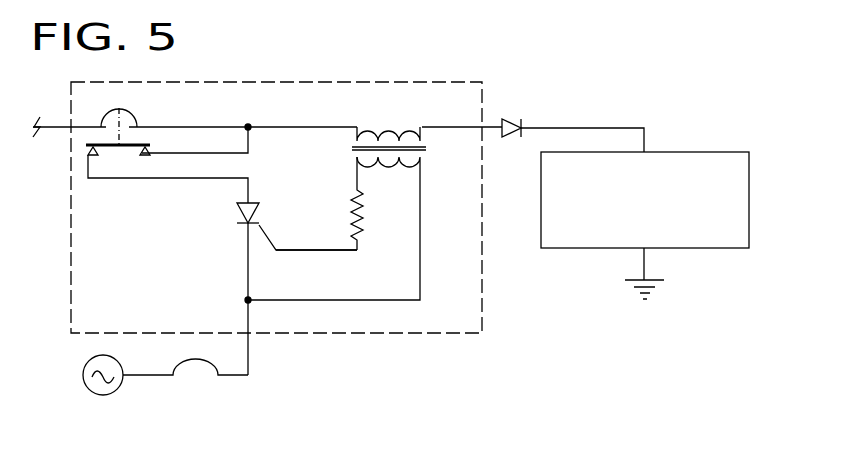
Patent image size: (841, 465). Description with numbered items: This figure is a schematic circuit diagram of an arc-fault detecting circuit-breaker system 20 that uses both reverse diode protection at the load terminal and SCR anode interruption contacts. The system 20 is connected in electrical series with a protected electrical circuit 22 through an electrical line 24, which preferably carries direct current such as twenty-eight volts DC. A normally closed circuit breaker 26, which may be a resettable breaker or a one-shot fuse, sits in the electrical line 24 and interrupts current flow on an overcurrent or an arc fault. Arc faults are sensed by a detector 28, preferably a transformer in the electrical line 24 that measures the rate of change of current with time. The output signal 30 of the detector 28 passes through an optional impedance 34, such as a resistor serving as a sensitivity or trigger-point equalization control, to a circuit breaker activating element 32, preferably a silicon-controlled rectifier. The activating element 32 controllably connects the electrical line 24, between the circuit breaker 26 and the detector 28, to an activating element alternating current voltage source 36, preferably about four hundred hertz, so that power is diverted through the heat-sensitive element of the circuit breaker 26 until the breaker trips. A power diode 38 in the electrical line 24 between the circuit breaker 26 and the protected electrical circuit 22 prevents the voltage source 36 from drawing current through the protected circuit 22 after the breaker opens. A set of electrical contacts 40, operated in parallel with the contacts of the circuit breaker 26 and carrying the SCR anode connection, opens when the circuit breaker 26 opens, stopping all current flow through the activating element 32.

The arc-fault detecting circuit-breaker system 20 is at (381, 82).
The protected electrical circuit 22 is at (715, 152).
The electrical line 24 is at (225, 127).
The circuit breaker 26 is at (134, 103).
The detector 28 is at (410, 122).
The output signal 30 is at (359, 250).
The circuit breaker activating element 32 is at (238, 212).
The impedance 34 is at (363, 208).
The activating element alternating current voltage source 36 is at (118, 386).
The power diode 38 is at (508, 122).
The set of electrical contacts 40 is at (124, 149).